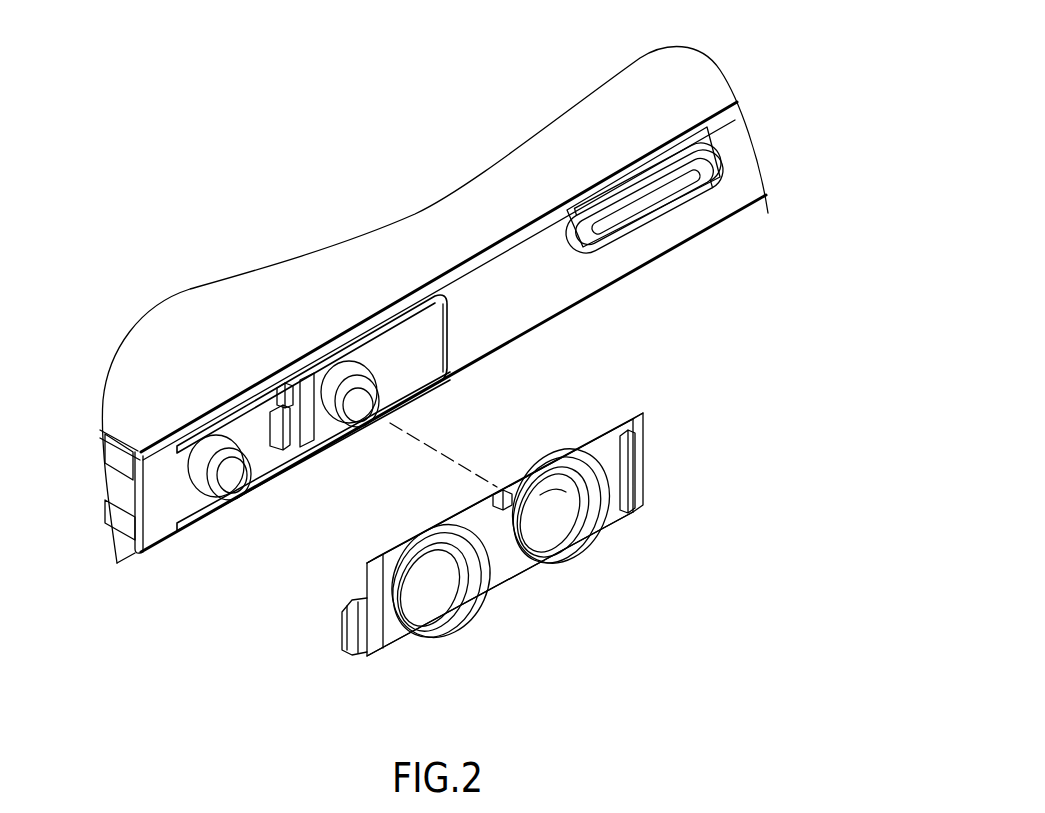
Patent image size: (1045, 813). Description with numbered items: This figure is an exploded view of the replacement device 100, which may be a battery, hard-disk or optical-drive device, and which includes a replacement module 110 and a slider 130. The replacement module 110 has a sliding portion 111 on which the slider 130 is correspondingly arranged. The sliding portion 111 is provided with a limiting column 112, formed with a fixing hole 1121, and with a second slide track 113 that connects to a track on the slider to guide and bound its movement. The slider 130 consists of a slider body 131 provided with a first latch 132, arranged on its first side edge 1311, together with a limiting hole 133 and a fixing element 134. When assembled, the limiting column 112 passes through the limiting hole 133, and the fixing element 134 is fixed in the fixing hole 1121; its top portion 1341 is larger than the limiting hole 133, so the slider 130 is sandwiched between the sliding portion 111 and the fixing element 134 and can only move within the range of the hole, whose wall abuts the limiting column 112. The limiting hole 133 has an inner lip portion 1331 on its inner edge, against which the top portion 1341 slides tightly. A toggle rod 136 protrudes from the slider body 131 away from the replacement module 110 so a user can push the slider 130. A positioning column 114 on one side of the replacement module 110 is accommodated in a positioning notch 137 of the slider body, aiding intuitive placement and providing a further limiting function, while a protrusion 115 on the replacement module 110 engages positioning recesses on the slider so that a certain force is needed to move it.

The replacement device 100 is at (736, 82).
The replacement module 110 is at (642, 268).
The sliding portion 111 is at (390, 303).
The limiting column 112 is at (347, 372).
The fixing hole 1121 is at (352, 418).
The second slide track 113 is at (210, 425).
The positioning column 114 is at (288, 385).
The protrusion 115 is at (287, 423).
The slider 130 is at (645, 430).
The slider body 131 is at (507, 582).
The first side edge 1311 is at (400, 633).
The first latch 132 is at (342, 632).
The limiting hole 133 is at (584, 485).
The inner lip portion 1331 is at (615, 475).
The fixing element 134 is at (596, 552).
The top portion 1341 is at (557, 518).
The toggle rod 136 is at (628, 461).
The positioning notch 137 is at (492, 494).